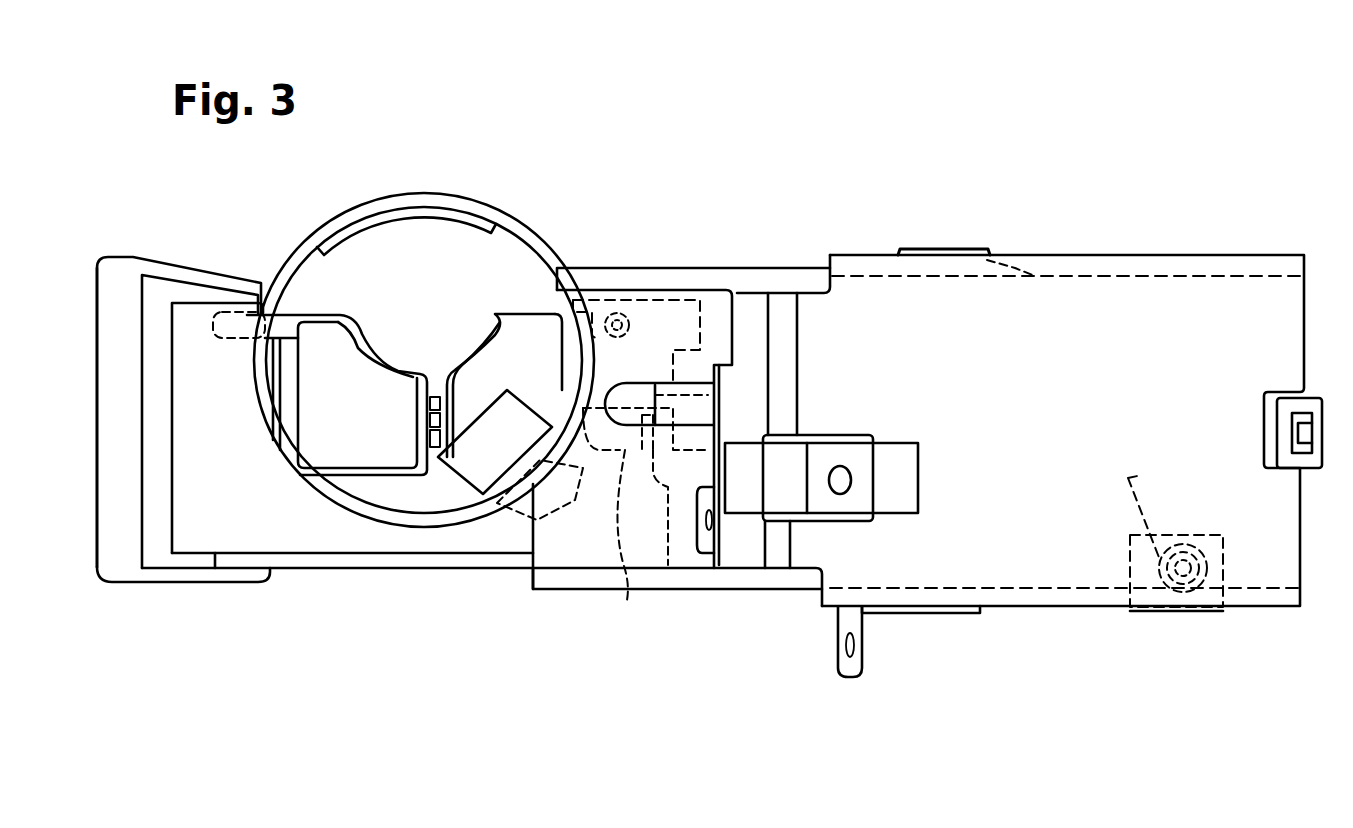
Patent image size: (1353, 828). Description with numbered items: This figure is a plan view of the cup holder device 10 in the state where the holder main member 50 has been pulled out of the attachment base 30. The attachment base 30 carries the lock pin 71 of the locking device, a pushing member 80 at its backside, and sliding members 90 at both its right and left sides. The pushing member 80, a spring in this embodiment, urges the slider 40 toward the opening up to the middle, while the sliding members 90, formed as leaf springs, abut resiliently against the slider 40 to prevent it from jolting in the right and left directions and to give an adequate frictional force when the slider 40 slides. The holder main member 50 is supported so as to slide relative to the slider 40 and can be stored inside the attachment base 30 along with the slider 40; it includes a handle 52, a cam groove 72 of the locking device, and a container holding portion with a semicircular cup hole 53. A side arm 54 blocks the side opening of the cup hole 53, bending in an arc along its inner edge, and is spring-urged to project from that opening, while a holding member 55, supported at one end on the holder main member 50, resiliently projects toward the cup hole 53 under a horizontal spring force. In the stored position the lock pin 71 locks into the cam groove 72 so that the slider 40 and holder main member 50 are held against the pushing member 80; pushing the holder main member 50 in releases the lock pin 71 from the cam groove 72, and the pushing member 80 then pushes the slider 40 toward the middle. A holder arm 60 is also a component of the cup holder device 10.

The cup holder device 10 is at (632, 203).
The attachment base 30 is at (1155, 336).
The slider 40 is at (678, 325).
The holder main member 50 is at (217, 503).
The handle 52 is at (117, 472).
The cup hole 53 is at (490, 280).
The side arm 54 is at (410, 200).
The holding member 55 is at (483, 475).
The holder arm 60 is at (328, 350).
The lock pin 71 is at (1312, 433).
The cam groove 72 is at (627, 600).
The pushing member 80 is at (1172, 600).
The sliding members 90 is at (1069, 278).